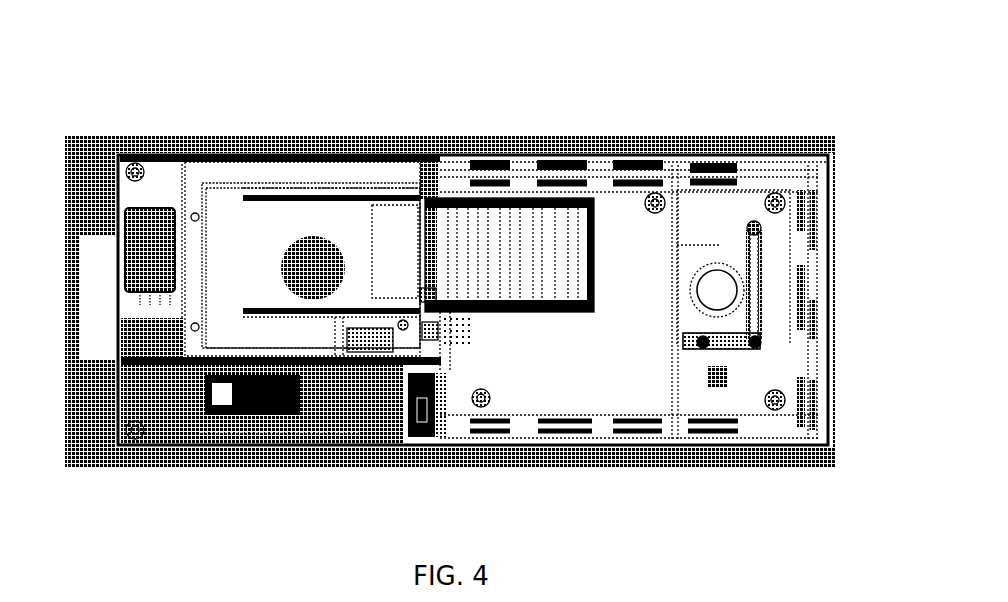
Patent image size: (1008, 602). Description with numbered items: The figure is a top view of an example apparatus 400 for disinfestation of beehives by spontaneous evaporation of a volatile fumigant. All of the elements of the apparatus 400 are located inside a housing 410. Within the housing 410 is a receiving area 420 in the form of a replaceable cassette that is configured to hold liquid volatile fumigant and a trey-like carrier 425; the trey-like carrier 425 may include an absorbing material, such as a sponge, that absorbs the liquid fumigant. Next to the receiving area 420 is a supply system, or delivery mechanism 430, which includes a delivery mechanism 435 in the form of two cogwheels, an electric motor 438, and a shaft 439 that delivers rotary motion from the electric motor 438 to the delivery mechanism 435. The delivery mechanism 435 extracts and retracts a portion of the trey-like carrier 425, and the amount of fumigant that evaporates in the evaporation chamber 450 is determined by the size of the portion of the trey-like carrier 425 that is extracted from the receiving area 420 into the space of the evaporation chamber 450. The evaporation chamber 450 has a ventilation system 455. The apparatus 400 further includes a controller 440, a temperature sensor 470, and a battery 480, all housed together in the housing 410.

The apparatus 400 is at (395, 68).
The housing 410 is at (518, 148).
The receiving area 420 is at (330, 217).
The trey-like carrier 425 is at (542, 235).
The delivery mechanism 430 is at (420, 350).
The delivery mechanism 435 is at (425, 293).
The electric motor 438 is at (423, 405).
The shaft 439 is at (427, 331).
The controller 440 is at (245, 402).
The evaporation chamber 450 is at (532, 374).
The ventilation system 455 is at (713, 287).
The temperature sensor 470 is at (716, 380).
The battery 480 is at (157, 250).